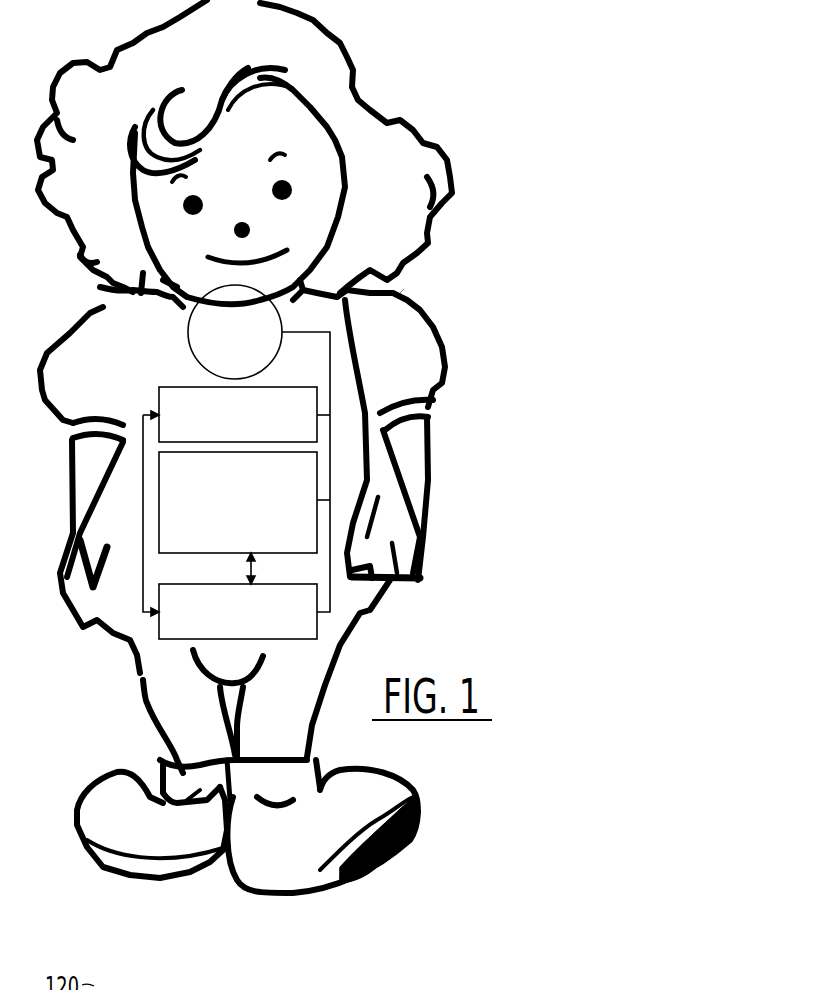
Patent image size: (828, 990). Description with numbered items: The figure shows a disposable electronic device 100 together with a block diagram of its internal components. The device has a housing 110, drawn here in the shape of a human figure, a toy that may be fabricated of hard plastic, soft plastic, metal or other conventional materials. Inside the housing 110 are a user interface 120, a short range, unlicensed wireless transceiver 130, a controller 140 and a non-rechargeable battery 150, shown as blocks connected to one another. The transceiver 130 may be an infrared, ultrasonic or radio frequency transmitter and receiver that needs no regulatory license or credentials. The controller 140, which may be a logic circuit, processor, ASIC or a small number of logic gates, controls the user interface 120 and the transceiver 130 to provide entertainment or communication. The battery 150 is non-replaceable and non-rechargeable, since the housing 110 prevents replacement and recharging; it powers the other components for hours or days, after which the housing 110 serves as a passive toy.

The disposable electronic device 100 is at (437, 82).
The housing 110 is at (402, 291).
The user interface 120 is at (178, 387).
The short range, unlicensed wireless transceiver 130 is at (159, 515).
The controller 140 is at (193, 640).
The non-rechargeable battery 150 is at (188, 330).